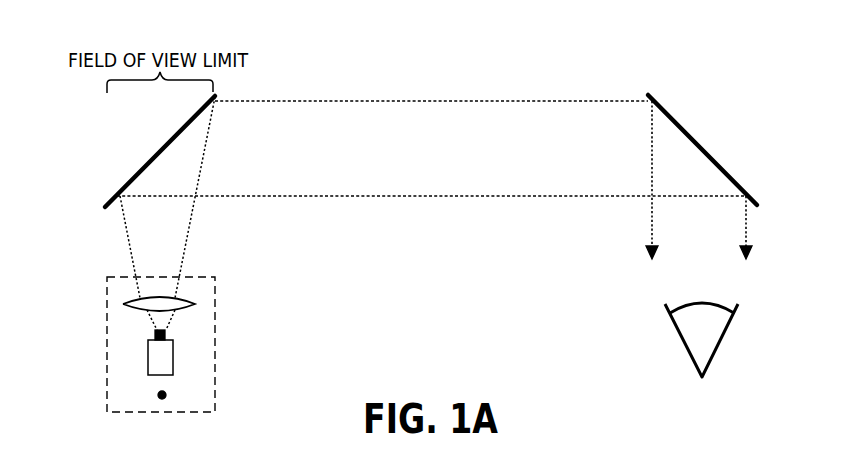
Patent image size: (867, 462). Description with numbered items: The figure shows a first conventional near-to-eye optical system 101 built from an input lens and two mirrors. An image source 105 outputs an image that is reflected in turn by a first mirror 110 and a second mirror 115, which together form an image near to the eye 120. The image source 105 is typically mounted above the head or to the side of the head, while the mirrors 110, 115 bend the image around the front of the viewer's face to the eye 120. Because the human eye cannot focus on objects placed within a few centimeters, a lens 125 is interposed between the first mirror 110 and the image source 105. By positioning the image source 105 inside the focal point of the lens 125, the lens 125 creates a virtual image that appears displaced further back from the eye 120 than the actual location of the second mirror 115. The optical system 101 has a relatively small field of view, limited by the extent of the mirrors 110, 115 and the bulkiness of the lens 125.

The near-to-eye optical system 101 is at (438, 256).
The image source 105 is at (148, 356).
The first mirror 110 is at (122, 186).
The second mirror 115 is at (713, 157).
The eye 120 is at (718, 347).
The lens 125 is at (123, 303).